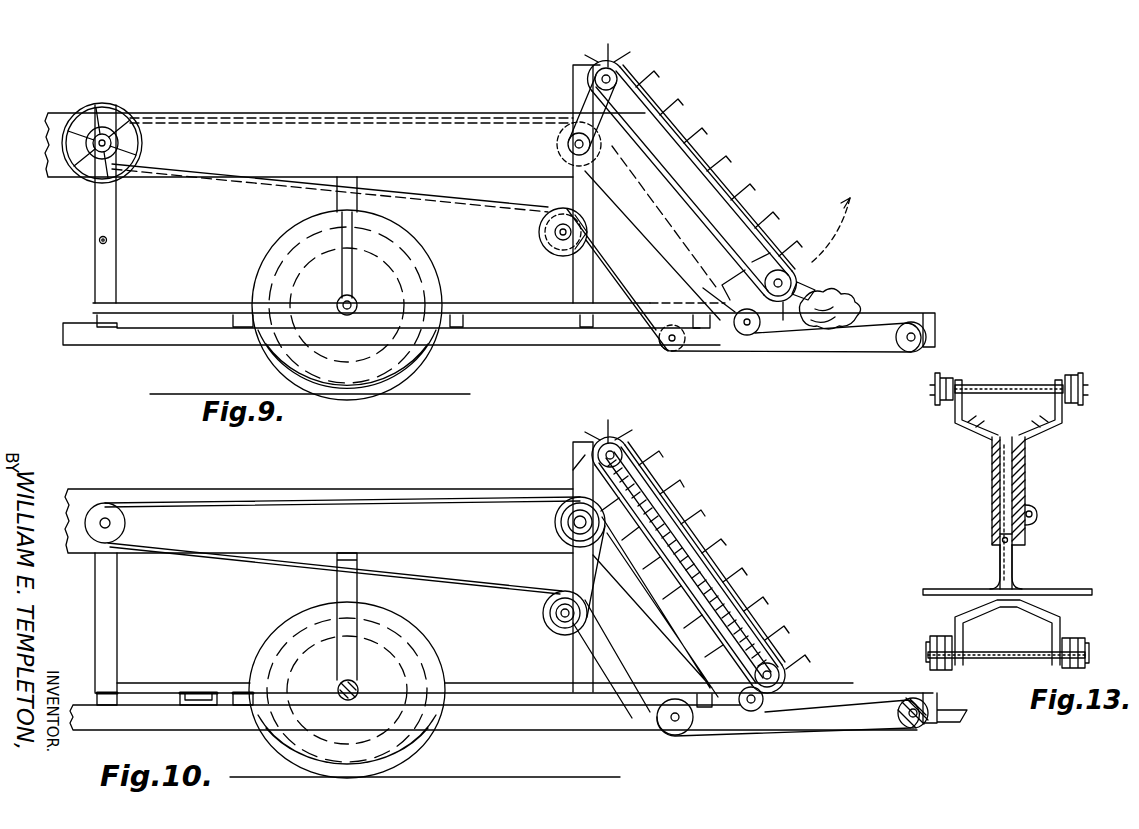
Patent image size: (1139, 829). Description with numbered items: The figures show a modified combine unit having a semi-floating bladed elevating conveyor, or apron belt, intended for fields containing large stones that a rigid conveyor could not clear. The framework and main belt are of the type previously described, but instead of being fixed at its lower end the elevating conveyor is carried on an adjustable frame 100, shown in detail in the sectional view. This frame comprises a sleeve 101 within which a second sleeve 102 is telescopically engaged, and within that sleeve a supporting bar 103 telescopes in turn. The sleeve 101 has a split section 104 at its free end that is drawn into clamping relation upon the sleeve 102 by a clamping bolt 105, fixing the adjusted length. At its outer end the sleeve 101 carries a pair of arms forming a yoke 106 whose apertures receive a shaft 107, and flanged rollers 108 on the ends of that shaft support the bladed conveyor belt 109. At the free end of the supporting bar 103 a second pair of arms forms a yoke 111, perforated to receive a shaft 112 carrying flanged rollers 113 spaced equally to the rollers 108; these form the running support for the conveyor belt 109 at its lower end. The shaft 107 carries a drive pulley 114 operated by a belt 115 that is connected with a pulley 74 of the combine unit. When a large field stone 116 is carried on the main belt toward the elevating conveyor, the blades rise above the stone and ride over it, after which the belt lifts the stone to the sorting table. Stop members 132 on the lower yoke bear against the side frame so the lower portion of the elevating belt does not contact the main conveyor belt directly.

In FIG. 9, the pulley 74 is at (568, 143).
In FIG. 9, the drive pulley 114 is at (594, 78).
In FIG. 9, the belt 115 is at (590, 98).
In FIG. 9, the stop members 132 is at (766, 236).
In FIG. 10, the stop members 132 is at (753, 620).
In FIG. 13, the stop members 132 is at (963, 589).
In FIG. 9, the field stone 116 is at (836, 292).
In FIG. 10, the bladed conveyor belt 109 is at (690, 553).
In FIG. 10, the supporting bar 103 is at (712, 594).
In FIG. 13, the supporting bar 103 is at (1010, 570).
In FIG. 13, the shaft 107 is at (1037, 385).
In FIG. 13, the flanged rollers 108 is at (1083, 378).
In FIG. 13, the yoke 106 is at (1052, 422).
In FIG. 13, the sleeve 101 is at (1020, 462).
In FIG. 13, the split section 104 is at (1024, 490).
In FIG. 13, the clamping bolt 105 is at (1038, 513).
In FIG. 13, the adjustable frame 100 is at (993, 526).
In FIG. 13, the second sleeve 102 is at (1003, 540).
In FIG. 13, the yoke 111 is at (1045, 611).
In FIG. 13, the shaft 112 is at (984, 658).
In FIG. 13, the flanged rollers 113 is at (1072, 646).